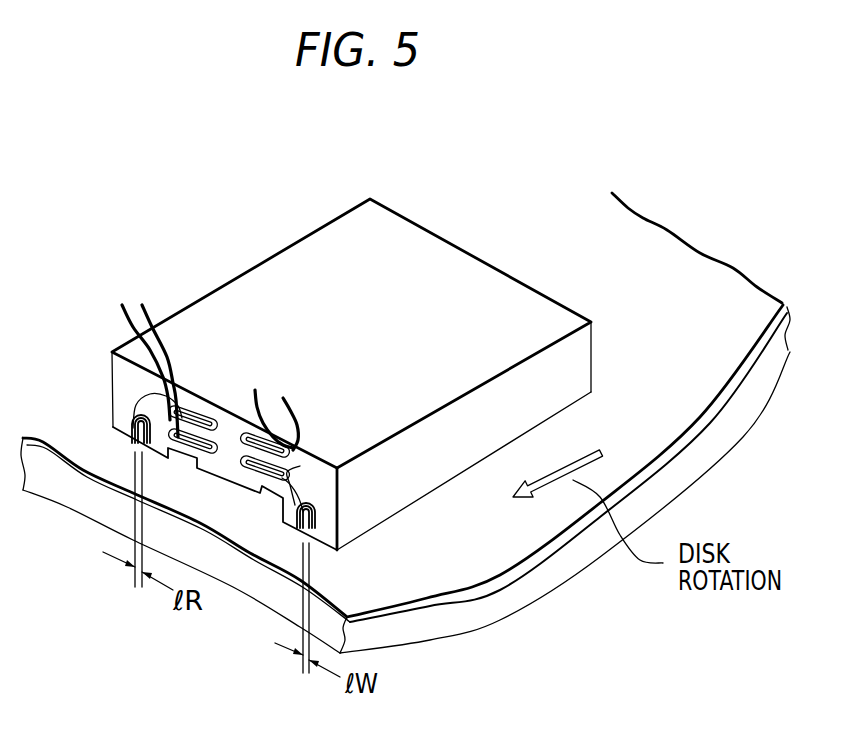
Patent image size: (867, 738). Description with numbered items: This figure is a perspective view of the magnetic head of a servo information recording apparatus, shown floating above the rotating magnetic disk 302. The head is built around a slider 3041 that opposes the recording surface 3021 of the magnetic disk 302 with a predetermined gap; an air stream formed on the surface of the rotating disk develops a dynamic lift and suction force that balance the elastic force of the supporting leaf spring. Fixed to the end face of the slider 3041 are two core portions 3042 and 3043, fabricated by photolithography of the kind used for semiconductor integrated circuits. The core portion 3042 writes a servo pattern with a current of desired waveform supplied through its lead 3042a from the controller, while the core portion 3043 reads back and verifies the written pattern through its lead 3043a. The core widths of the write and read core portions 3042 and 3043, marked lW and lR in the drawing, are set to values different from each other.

The magnetic disk 302 is at (732, 422).
The recording surface 3021 is at (645, 240).
The slider 3041 is at (330, 240).
The core portion 3042 is at (335, 522).
The lead 3042a is at (285, 398).
The core portion 3043 is at (113, 423).
The lead 3043a is at (147, 315).